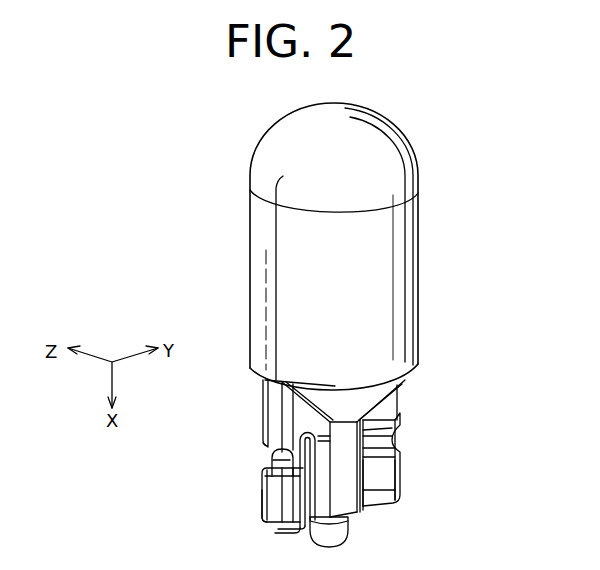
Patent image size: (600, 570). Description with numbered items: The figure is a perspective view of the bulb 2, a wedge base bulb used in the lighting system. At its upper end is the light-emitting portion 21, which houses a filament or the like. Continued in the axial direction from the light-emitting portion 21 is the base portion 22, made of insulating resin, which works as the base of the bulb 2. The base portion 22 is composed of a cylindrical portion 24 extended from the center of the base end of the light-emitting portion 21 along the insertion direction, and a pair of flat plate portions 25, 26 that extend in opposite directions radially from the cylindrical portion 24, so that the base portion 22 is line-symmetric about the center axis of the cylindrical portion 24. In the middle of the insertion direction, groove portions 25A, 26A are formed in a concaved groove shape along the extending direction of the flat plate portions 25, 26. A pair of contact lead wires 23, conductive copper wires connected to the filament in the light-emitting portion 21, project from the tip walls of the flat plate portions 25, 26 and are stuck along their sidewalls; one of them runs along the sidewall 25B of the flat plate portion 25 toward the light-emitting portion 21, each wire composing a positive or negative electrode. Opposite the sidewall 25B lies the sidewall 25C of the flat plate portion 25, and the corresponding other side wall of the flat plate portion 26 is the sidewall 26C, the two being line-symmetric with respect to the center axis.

The bulb 2 is at (240, 147).
The light-emitting portion 21 is at (250, 223).
The base portion 22 is at (262, 412).
The contact lead wire 23 is at (310, 432).
The cylindrical portion 24 is at (368, 493).
The flat plate portion 25 is at (272, 500).
The groove portion 25A is at (272, 458).
The sidewall 25B is at (323, 497).
The sidewall 25C is at (265, 488).
The flat plate portion 26 is at (400, 460).
The groove portion 26A is at (393, 432).
The sidewall 26C is at (383, 477).